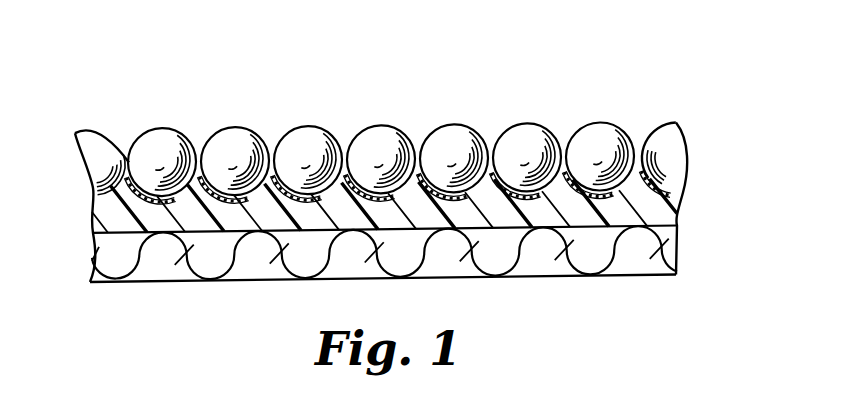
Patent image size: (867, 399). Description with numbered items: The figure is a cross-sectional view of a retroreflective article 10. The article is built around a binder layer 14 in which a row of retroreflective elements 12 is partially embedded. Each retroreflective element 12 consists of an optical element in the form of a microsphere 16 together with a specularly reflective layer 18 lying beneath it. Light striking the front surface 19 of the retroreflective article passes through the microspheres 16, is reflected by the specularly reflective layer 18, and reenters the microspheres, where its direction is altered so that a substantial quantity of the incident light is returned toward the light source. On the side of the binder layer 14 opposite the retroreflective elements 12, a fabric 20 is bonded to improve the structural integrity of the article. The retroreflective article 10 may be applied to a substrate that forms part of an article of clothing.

The retroreflective article 10 is at (470, 58).
The retroreflective elements 12 is at (543, 128).
The binder layer 14 is at (107, 217).
The microspheres 16 is at (298, 133).
The specularly reflective layer 18 is at (684, 200).
The front surface 19 is at (380, 128).
The fabric 20 is at (638, 263).